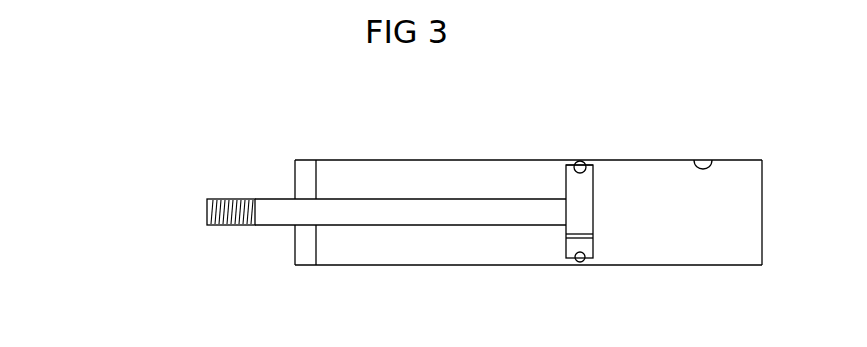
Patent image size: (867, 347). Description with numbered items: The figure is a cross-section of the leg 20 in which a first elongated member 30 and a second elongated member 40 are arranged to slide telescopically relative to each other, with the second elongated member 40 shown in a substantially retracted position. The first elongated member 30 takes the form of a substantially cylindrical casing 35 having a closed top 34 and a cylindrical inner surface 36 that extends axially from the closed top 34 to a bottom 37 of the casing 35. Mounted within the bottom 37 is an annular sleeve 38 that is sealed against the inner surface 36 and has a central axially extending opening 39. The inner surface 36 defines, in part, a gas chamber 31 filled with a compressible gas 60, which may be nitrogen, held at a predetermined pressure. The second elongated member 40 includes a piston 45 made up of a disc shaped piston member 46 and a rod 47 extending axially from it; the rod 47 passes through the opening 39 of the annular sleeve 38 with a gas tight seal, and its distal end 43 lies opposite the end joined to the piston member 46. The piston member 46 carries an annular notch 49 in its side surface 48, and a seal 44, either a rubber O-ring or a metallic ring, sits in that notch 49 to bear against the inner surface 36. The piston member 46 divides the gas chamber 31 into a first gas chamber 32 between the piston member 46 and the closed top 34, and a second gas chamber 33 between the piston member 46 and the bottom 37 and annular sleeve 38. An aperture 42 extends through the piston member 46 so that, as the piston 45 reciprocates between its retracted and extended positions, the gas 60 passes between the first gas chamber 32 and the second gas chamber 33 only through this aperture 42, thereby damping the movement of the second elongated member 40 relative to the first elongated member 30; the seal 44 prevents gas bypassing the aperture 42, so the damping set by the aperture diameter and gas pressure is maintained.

The leg 20 is at (612, 88).
The first elongated member 30 is at (732, 160).
The gas chamber 31 is at (455, 248).
The first gas chamber 32 is at (762, 180).
The second gas chamber 33 is at (393, 172).
The closed top 34 is at (762, 225).
The casing 35 is at (466, 160).
The cylindrical inner surface 36 is at (695, 160).
The bottom 37 is at (295, 265).
The annular sleeve 38 is at (294, 175).
The central axially extending opening 39 is at (326, 200).
The second elongated member 40 is at (389, 215).
The aperture 42 is at (565, 240).
The distal end 43 is at (207, 212).
The seal 44 is at (580, 263).
The piston 45 is at (272, 207).
The piston member 46 is at (593, 200).
The rod 47 is at (273, 218).
The side surface 48 is at (572, 190).
The annular notch 49 is at (588, 163).
The compressible gas 60 is at (724, 238).